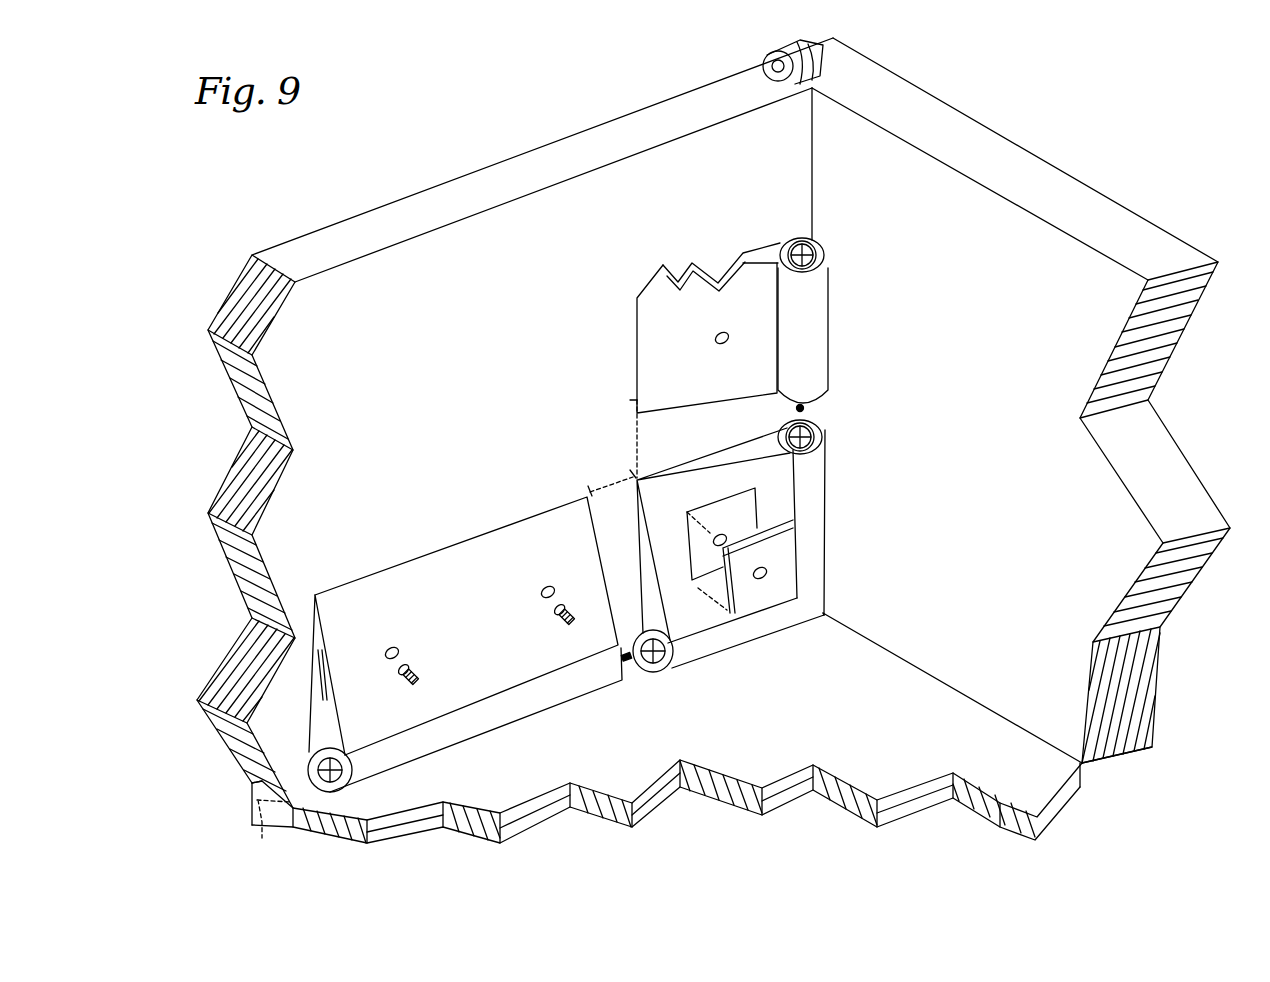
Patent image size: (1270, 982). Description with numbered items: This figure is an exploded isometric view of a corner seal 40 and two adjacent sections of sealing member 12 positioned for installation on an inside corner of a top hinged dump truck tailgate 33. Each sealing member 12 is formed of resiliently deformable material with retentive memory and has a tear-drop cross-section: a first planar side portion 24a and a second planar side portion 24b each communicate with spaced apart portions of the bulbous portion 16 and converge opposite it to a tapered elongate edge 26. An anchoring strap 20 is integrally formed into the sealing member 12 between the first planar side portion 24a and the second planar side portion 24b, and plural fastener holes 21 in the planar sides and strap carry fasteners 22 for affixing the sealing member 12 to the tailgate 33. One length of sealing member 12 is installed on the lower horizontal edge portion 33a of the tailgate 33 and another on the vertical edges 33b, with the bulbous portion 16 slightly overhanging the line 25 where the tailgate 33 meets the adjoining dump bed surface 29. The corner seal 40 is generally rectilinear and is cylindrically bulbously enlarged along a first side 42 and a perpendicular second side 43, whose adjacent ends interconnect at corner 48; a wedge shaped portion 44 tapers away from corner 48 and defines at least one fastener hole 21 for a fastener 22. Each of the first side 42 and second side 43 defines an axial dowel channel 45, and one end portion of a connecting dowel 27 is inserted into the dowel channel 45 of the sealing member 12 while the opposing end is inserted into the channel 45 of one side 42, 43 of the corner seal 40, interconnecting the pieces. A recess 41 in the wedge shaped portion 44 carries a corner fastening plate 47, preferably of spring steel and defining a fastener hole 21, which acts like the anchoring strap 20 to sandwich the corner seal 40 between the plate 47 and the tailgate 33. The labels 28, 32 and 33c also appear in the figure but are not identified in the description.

The sealing member 12 is at (630, 380).
The bulbous portion 16 is at (813, 323).
The anchoring strap 20 is at (703, 262).
The fastener holes 21 is at (722, 343).
The fasteners 22 is at (562, 612).
The first planar side portion 24a is at (750, 247).
The second planar side portion 24b is at (663, 346).
The line 25 is at (812, 135).
The tapered elongate edge 26 is at (410, 558).
The connecting dowel 27 is at (808, 412).
The boss / knuckle 28 is at (810, 250).
The dump bed surface 29 is at (997, 217).
The washer 32 is at (813, 265).
The tailgate 33 is at (498, 275).
The lower horizontal edge portion 33a is at (290, 781).
The vertical edges 33b is at (788, 164).
The frame top hinge knob 33c is at (835, 38).
The corner seal 40 is at (836, 540).
The recess 41 is at (700, 510).
The first side 42 is at (813, 517).
The second side 43 is at (737, 635).
The wedge shaped portion 44 is at (612, 470).
The axial dowel channel 45 is at (800, 250).
The corner fastening plate 47 is at (728, 588).
The corner 48 is at (814, 610).